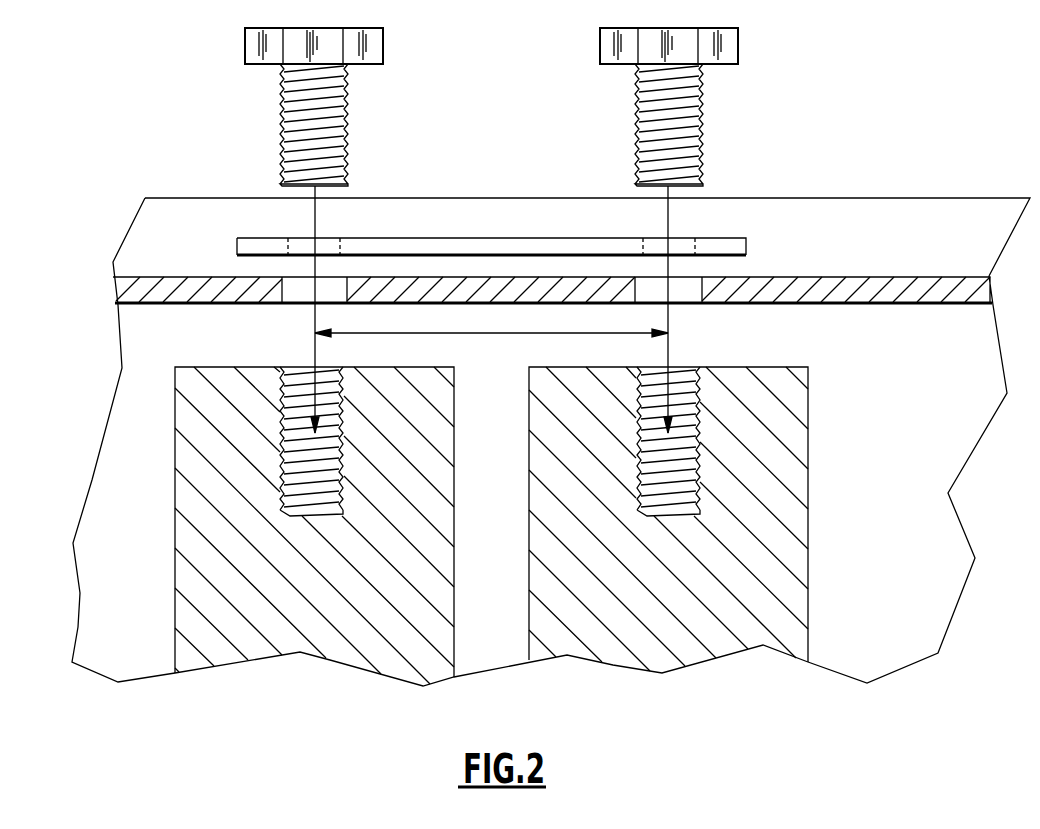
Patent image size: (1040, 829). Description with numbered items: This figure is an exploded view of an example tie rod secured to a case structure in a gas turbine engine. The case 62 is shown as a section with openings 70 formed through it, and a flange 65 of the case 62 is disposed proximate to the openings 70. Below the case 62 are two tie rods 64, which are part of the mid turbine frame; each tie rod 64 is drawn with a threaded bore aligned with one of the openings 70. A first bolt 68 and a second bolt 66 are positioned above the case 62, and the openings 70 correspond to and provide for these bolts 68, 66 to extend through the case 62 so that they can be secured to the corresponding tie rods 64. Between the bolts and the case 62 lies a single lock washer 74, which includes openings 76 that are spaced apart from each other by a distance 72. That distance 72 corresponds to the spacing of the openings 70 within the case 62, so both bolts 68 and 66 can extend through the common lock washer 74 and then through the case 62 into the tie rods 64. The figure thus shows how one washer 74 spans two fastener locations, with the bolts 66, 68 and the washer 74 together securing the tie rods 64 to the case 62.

The case 62 is at (823, 290).
The tie rod 64 is at (843, 443).
The flange 65 is at (852, 222).
The second bolt 66 is at (701, 97).
The first bolt 68 is at (349, 97).
The opening 70 is at (710, 292).
The distance 72 is at (508, 337).
The lock washer 74 is at (499, 243).
The opening 76 is at (742, 172).